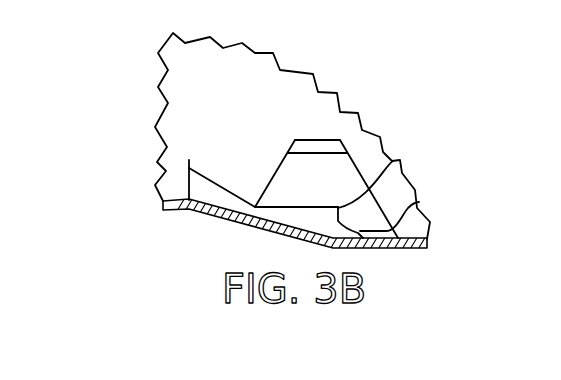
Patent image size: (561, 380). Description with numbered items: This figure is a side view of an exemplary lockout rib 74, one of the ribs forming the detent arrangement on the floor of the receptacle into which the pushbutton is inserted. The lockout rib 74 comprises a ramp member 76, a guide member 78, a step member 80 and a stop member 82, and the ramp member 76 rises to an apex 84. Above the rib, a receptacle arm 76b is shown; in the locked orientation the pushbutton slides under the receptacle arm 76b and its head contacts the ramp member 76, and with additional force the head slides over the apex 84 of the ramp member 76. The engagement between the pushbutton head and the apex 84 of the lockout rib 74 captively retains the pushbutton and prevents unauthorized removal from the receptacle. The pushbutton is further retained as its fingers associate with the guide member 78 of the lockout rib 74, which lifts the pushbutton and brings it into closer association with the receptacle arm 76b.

The lockout rib 74 is at (173, 180).
The ramp member 76 is at (224, 177).
The receptacle arm 76b is at (300, 139).
The guide member 78 is at (293, 203).
The step member 80 is at (394, 161).
The stop member 82 is at (419, 202).
The apex 84 is at (190, 159).